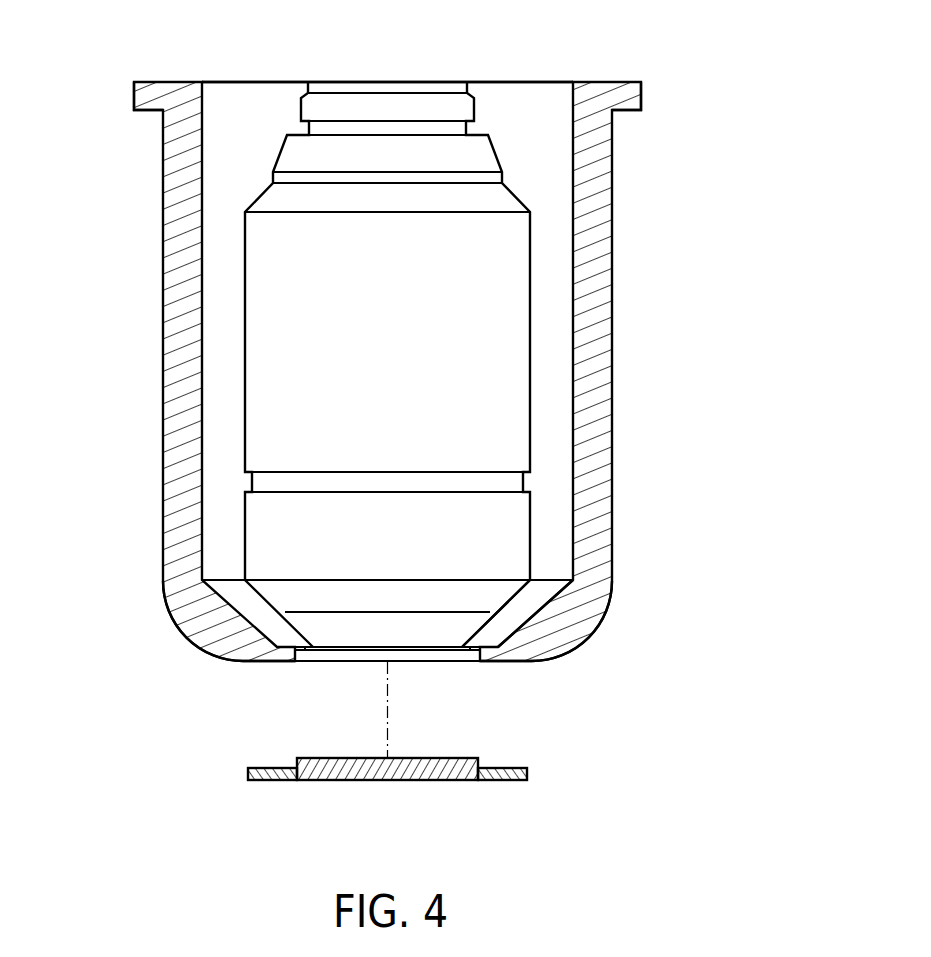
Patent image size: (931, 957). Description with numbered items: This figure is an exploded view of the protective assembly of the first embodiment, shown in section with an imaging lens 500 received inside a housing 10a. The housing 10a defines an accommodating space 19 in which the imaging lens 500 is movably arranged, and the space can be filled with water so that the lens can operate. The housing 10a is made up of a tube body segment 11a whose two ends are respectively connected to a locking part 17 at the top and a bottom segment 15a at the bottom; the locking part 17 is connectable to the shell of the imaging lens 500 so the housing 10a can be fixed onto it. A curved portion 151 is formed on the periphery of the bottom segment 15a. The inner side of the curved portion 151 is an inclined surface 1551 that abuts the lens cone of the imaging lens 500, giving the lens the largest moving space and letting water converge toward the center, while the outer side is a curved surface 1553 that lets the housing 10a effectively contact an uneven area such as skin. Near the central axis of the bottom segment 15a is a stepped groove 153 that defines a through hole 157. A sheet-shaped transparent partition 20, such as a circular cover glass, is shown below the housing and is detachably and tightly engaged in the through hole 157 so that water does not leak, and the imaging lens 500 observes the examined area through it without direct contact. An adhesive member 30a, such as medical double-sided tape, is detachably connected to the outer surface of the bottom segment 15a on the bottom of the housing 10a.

The imaging lens 500 is at (398, 87).
The accommodating space 19 is at (528, 117).
The locking part 17 is at (133, 103).
The housing 10a is at (630, 247).
The tube body segment 11a is at (597, 313).
The inclined surface 1551 is at (525, 625).
The curved portion 151 is at (598, 625).
The curved surface 1553 is at (188, 640).
The through hole 157 is at (340, 657).
The stepped groove 153 is at (472, 660).
The bottom segment 15a is at (573, 650).
The adhesive member 30a is at (273, 781).
The transparent partition 20 is at (387, 781).